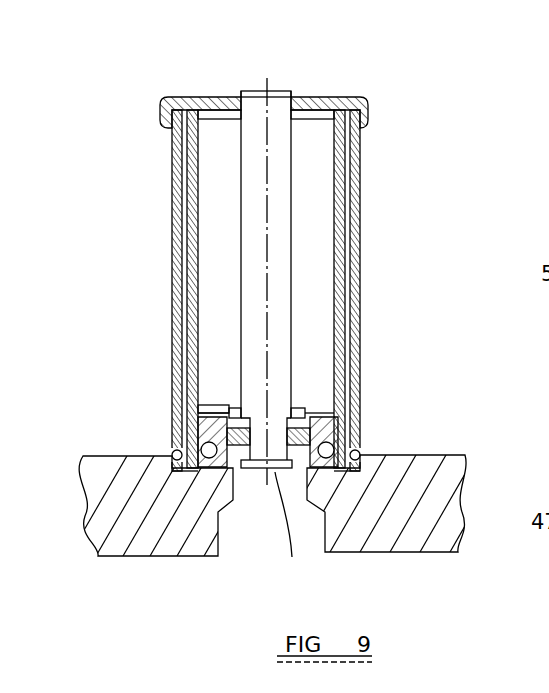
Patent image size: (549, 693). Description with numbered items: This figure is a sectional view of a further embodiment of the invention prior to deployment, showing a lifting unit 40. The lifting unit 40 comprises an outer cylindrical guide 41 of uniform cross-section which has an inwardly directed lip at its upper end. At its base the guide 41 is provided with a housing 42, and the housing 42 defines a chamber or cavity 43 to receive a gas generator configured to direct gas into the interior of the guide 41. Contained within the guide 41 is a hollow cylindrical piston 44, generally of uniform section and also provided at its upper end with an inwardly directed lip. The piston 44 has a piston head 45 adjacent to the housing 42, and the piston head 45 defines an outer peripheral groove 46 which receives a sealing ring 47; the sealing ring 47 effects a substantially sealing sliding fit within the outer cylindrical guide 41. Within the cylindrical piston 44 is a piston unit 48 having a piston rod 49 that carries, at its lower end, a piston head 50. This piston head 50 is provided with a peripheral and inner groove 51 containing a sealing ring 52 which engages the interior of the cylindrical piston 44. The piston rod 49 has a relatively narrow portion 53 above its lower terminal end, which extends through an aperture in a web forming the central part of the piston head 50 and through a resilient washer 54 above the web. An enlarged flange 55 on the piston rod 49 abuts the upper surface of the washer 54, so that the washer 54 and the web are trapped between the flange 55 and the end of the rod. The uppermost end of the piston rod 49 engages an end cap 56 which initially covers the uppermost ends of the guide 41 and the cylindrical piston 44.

The lifting unit 40 is at (137, 350).
The outer cylindrical guide 41 is at (344, 282).
The housing 42 is at (418, 455).
The chamber or cavity 43 is at (262, 522).
The hollow cylindrical piston 44 is at (358, 241).
The piston head 45 is at (350, 418).
The outer peripheral groove 46 is at (357, 448).
The sealing ring 47 is at (172, 455).
The piston unit 48 is at (269, 220).
The piston rod 49 is at (273, 179).
The piston head 50 is at (327, 415).
The peripheral and inner groove 51 is at (213, 406).
The sealing ring 52 is at (177, 449).
The narrow portion 53 is at (276, 470).
The resilient washer 54 is at (252, 426).
The enlarged flange 55 is at (302, 412).
The end cap 56 is at (308, 97).